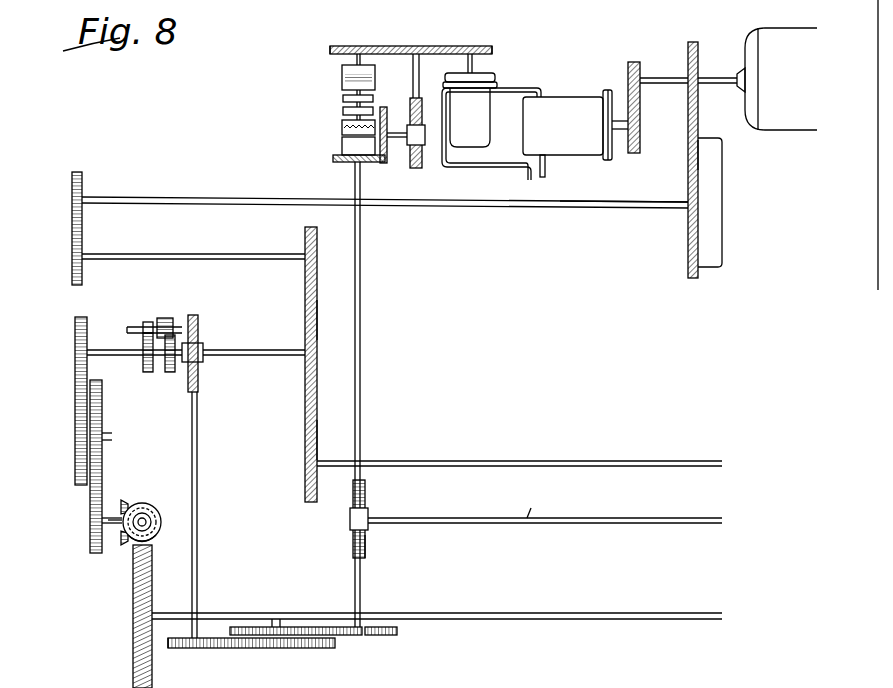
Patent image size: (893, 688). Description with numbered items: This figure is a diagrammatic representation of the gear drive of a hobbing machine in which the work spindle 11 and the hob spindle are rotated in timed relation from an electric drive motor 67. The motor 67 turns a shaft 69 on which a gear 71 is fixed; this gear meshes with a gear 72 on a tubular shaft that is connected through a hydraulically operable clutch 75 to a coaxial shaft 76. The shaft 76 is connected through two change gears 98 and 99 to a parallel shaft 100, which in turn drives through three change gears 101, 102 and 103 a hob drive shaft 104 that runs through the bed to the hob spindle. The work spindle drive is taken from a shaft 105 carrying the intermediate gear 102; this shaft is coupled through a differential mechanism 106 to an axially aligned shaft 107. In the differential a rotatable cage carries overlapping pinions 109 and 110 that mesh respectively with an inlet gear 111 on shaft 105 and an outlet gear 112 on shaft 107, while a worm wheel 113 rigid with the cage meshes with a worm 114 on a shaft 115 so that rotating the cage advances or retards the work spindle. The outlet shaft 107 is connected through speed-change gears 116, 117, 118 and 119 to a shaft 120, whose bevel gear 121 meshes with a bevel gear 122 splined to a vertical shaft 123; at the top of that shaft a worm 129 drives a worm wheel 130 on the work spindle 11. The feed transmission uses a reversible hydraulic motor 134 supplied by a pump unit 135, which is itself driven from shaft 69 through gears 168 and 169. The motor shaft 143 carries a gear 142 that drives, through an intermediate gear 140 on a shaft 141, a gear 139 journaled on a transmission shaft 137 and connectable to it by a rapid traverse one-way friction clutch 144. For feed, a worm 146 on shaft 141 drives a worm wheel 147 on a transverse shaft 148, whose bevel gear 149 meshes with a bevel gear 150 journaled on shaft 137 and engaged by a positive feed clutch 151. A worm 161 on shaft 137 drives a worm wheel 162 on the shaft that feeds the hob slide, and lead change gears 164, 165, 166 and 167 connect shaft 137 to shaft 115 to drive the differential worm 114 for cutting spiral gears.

The work spindle 11 is at (567, 613).
The electric drive motor 67 is at (750, 50).
The shaft 69 is at (676, 78).
The gear 71 is at (688, 99).
The gear 72 is at (698, 156).
The hydraulically operable clutch 75 is at (722, 184).
The shaft 76 is at (634, 208).
The change gear 98 is at (84, 190).
The change gear 99 is at (84, 244).
The parallel shaft 100 is at (246, 254).
The change gear 101 is at (305, 234).
The intermediate change gear 102 is at (317, 316).
The change gear 103 is at (316, 444).
The hob drive shaft 104 is at (468, 462).
The shaft 105 is at (246, 356).
The differential mechanism 106 is at (163, 317).
The shaft 107 is at (115, 352).
The pinion 109 is at (171, 324).
The pinion 110 is at (149, 322).
The inlet gear 111 is at (170, 373).
The outlet gear 112 is at (147, 373).
The worm wheel 113 is at (198, 325).
The worm 114 is at (203, 350).
The shaft 115 is at (197, 428).
The speed-change gear 116 is at (76, 332).
The speed-change gear 117 is at (90, 420).
The speed-change gear 118 is at (104, 433).
The speed-change gear 119 is at (90, 545).
The shaft 120 is at (113, 525).
The bevel gear 121 is at (124, 500).
The bevel gear 122 is at (145, 504).
The vertical shaft 123 is at (150, 516).
The worm 129 is at (160, 531).
The worm wheel 130 is at (150, 590).
The hydraulic motor 134 is at (484, 108).
The pump unit 135 is at (575, 142).
The transmission shaft 137 is at (361, 229).
The gear 139 is at (330, 51).
The intermediate gear 140 is at (434, 46).
The shaft 141 is at (413, 79).
The gear 142 is at (492, 50).
The motor shaft 143 is at (473, 66).
The rapid traverse one-way friction clutch 144 is at (339, 78).
The worm 146 is at (428, 138).
The worm wheel 147 is at (412, 166).
The transverse shaft 148 is at (394, 130).
The bevel gear 149 is at (340, 141).
The bevel gear 150 is at (334, 158).
The positive feed clutch 151 is at (339, 127).
The worm 161 is at (368, 515).
The worm wheel 162 is at (366, 548).
The lead change gear 164 is at (398, 631).
The lead change gear 165 is at (304, 627).
The lead change gear 166 is at (290, 649).
The lead change gear 167 is at (178, 649).
The gear 168 is at (628, 68).
The gear 169 is at (632, 153).